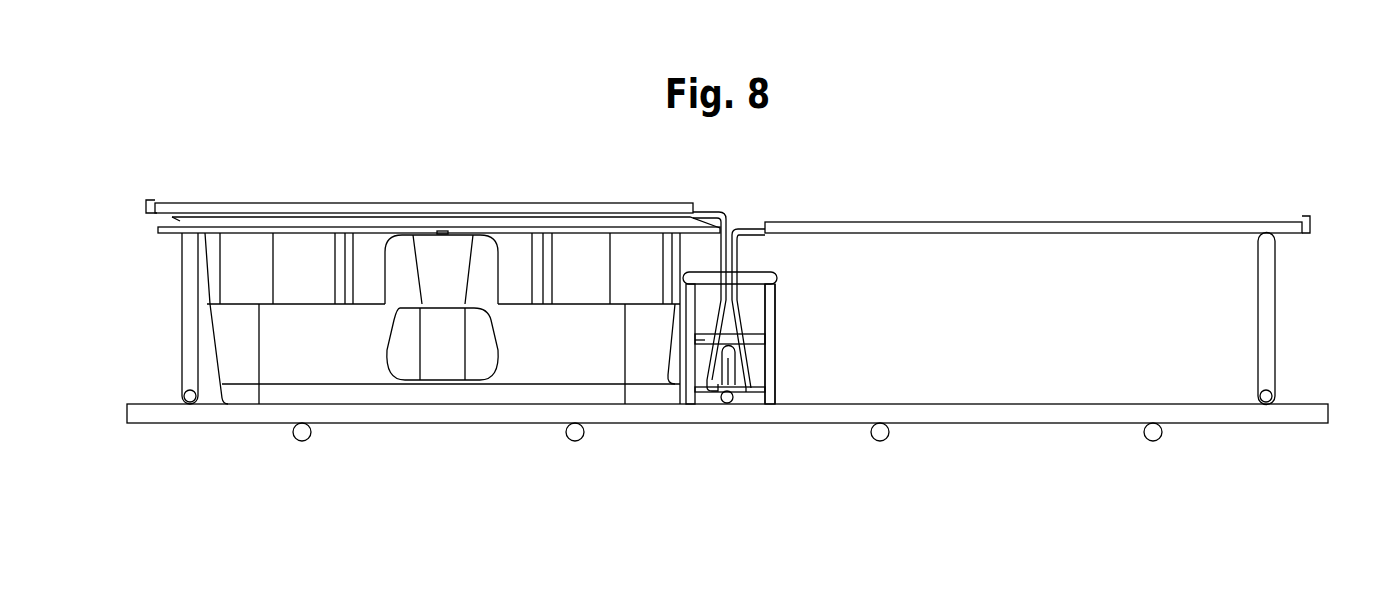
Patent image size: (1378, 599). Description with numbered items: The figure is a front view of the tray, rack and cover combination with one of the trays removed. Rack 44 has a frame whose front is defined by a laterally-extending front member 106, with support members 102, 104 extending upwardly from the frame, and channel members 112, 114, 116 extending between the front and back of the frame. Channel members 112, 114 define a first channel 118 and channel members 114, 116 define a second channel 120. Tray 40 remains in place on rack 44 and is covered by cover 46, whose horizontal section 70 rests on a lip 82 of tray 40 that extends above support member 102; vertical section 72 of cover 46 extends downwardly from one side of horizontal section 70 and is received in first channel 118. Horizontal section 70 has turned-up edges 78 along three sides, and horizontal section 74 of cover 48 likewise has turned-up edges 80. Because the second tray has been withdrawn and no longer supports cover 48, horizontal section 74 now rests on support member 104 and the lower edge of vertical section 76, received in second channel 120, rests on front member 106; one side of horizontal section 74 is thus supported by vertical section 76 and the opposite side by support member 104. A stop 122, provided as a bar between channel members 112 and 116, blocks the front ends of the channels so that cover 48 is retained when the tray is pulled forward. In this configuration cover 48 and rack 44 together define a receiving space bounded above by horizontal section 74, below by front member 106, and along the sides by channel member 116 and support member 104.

The tray 40 is at (215, 343).
The rack 44 is at (1287, 424).
The cover 46 is at (276, 204).
The cover 48 is at (928, 222).
The horizontal section 70 is at (707, 212).
The vertical section 72 is at (717, 385).
The horizontal section 74 is at (742, 228).
The vertical section 76 is at (750, 393).
The turned-up edges 78 is at (145, 210).
The turned-up edges 80 is at (1310, 215).
The lip 82 is at (158, 228).
The support member 102 is at (182, 302).
The support member 104 is at (1270, 283).
The front member 106 is at (1063, 423).
The channel member 112 is at (682, 367).
The channel member 114 is at (732, 367).
The channel member 116 is at (775, 377).
The first channel 118 is at (700, 382).
The second channel 120 is at (738, 385).
The stop 122 is at (705, 340).